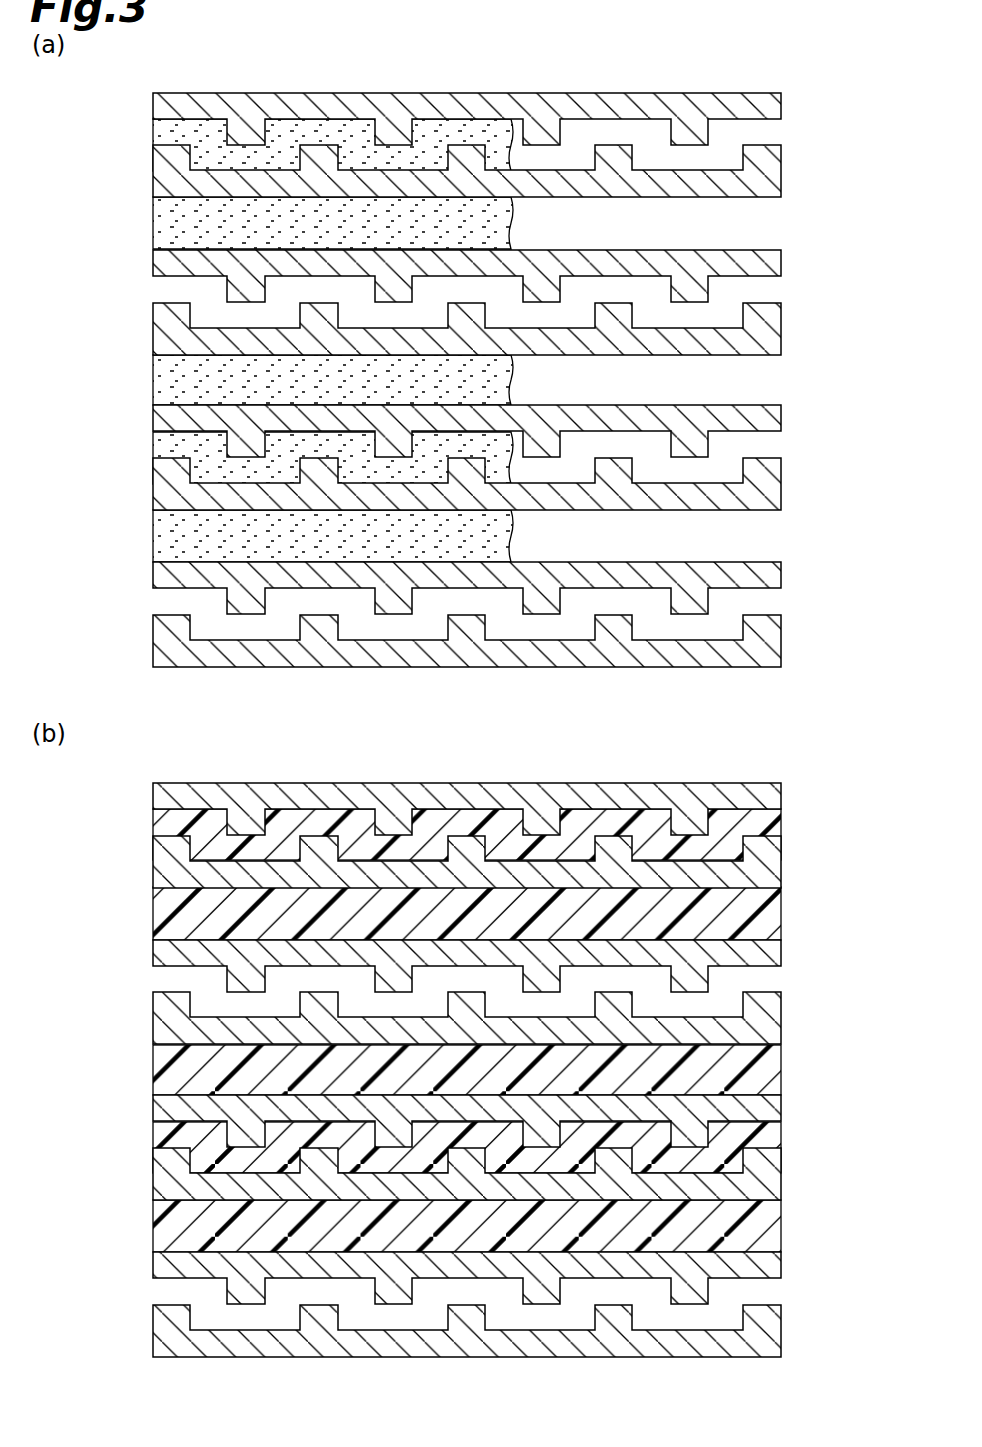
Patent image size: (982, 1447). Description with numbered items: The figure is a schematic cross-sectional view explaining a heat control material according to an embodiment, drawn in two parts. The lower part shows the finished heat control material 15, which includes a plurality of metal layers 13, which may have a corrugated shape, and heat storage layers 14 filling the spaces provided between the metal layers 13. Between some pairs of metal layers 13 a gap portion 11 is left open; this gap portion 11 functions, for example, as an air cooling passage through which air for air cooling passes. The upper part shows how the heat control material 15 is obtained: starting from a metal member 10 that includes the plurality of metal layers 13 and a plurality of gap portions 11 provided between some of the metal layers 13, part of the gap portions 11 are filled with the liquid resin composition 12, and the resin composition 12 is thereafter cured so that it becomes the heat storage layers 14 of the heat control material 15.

The metal member 10 is at (882, 108).
The gap portion 11 is at (774, 133).
The resin composition 12 is at (185, 136).
The metal layer 13 is at (760, 106).
The heat storage layer 14 is at (180, 822).
The heat control material 15 is at (881, 800).